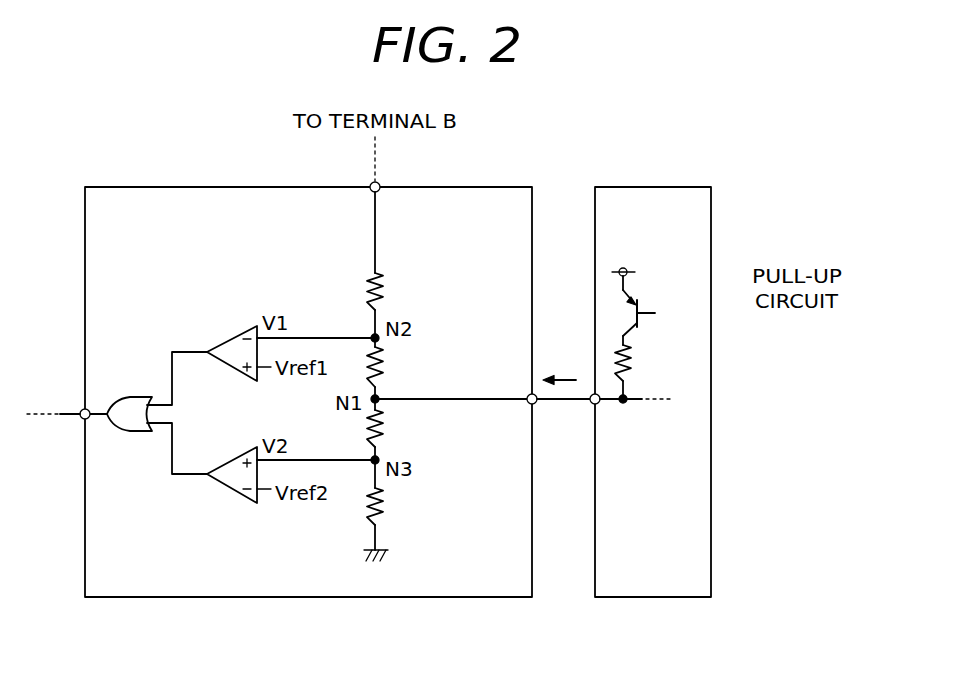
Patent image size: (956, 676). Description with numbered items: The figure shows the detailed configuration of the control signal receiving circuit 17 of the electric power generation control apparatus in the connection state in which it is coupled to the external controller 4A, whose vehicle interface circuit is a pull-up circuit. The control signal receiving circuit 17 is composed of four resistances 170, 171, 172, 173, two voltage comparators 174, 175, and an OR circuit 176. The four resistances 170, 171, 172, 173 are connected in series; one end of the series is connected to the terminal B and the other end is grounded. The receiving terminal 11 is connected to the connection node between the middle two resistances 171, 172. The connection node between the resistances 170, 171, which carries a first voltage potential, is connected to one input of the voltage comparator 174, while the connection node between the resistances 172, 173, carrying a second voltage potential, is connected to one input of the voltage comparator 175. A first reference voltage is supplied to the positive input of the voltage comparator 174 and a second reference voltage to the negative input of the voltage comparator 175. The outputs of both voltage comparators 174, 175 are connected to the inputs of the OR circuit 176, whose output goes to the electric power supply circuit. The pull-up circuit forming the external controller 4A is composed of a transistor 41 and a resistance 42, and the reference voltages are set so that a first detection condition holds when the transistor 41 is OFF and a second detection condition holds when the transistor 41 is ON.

The control signal receiving circuit 17 is at (493, 187).
The resistance 170 is at (379, 276).
The resistance 171 is at (379, 351).
The resistance 172 is at (379, 412).
The resistance 173 is at (379, 501).
The voltage comparator 174 is at (235, 337).
The voltage comparator 175 is at (235, 459).
The OR circuit 176 is at (132, 397).
The receiving terminal 11 is at (535, 405).
The external controller 4A is at (672, 187).
The transistor 41 is at (637, 305).
The resistance 42 is at (629, 350).